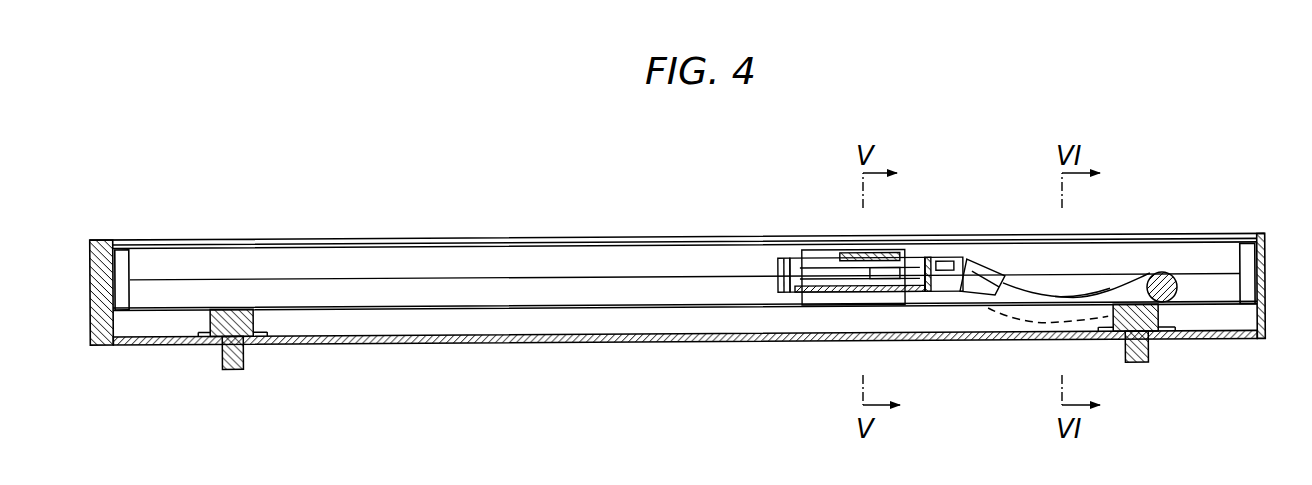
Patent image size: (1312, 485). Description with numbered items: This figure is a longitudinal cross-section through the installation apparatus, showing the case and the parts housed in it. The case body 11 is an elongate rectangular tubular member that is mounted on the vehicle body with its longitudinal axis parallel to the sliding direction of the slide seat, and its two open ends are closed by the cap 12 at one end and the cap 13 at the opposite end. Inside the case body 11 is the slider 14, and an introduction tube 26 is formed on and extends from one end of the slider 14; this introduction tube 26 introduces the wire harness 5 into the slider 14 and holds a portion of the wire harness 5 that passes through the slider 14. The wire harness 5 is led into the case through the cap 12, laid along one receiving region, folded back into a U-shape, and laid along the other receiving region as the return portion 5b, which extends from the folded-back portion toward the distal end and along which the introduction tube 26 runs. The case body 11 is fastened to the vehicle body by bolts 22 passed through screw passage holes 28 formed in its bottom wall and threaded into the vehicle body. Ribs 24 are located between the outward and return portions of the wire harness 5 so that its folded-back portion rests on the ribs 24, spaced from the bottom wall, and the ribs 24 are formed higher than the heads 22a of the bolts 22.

The wire harness 5 is at (1167, 270).
The return portion 5b is at (1073, 297).
The case body 11 is at (485, 349).
The cap 12 is at (88, 267).
The cap 13 is at (1269, 255).
The slider 14 is at (776, 257).
The bolt 22 is at (221, 357).
The head 22a is at (205, 332).
The rib 24 is at (1225, 325).
The introduction tube 26 is at (983, 256).
The screw passage hole 28 is at (243, 352).